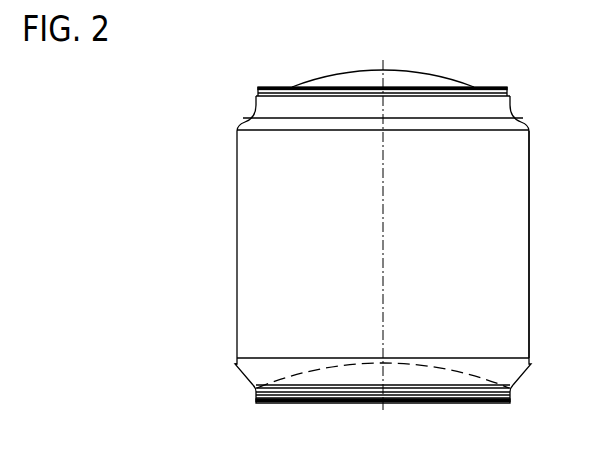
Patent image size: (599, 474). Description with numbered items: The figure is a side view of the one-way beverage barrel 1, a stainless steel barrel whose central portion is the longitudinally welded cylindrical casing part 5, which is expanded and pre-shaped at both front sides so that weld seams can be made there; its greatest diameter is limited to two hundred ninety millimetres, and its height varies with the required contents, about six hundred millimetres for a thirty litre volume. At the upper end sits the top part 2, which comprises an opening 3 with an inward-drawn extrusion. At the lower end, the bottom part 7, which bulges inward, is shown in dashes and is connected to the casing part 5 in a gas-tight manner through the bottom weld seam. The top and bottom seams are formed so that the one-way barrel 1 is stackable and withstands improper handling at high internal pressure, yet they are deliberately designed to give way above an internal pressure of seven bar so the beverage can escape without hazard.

The one-way beverage barrel 1 is at (531, 256).
The top part 2 is at (435, 72).
The opening 3 is at (384, 71).
The casing part 5 is at (498, 193).
The bottom part 7 is at (483, 378).